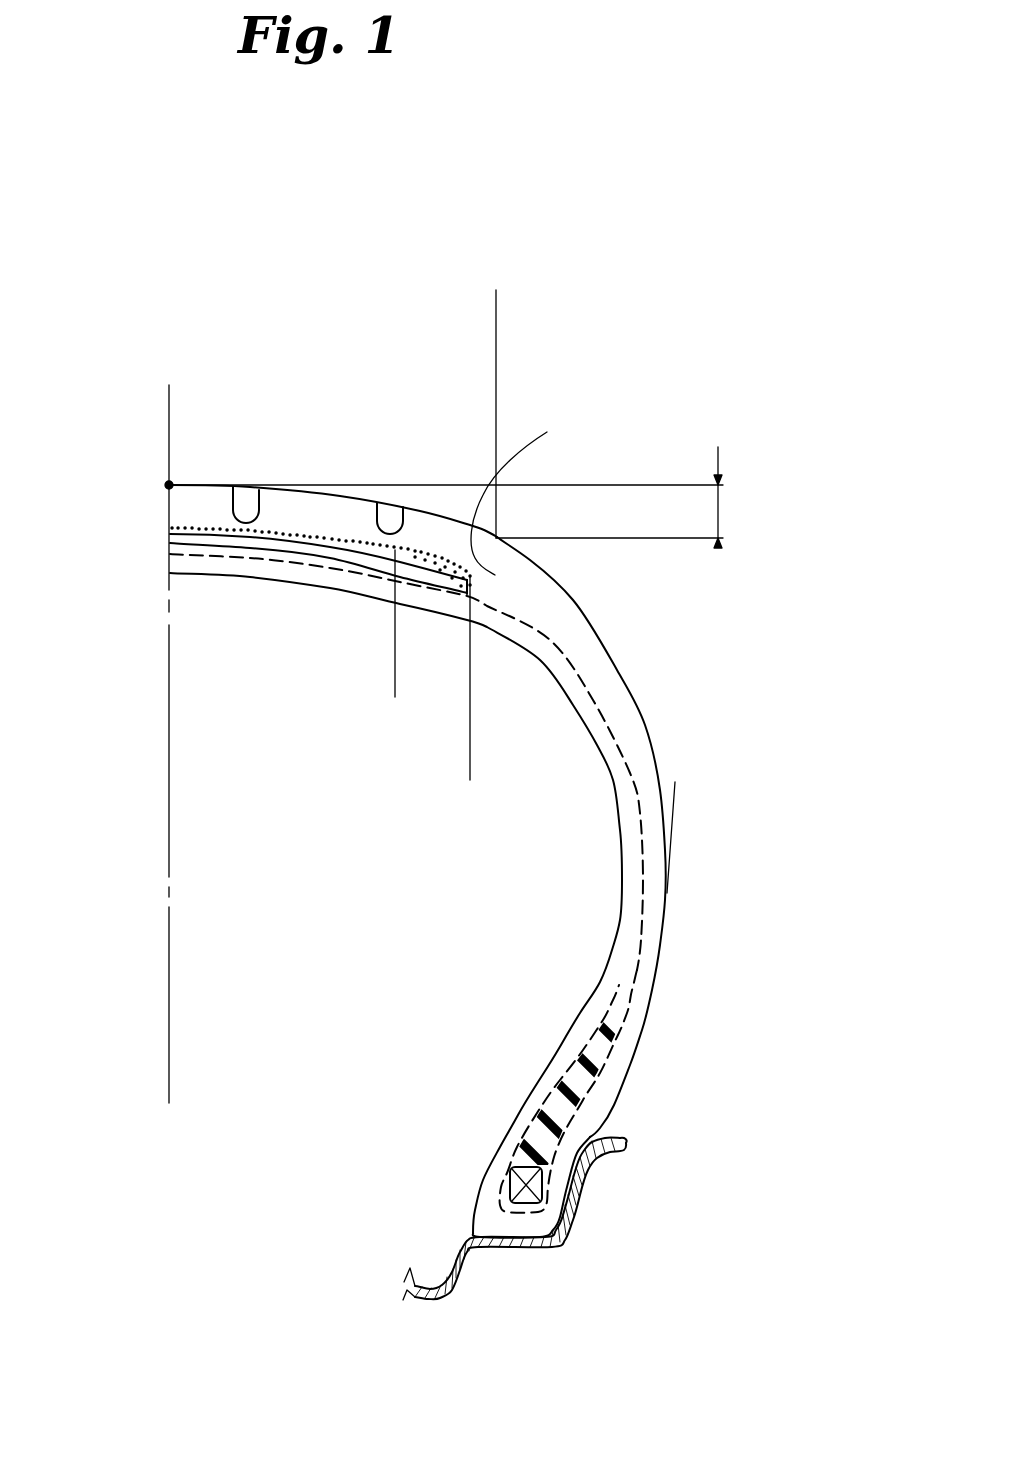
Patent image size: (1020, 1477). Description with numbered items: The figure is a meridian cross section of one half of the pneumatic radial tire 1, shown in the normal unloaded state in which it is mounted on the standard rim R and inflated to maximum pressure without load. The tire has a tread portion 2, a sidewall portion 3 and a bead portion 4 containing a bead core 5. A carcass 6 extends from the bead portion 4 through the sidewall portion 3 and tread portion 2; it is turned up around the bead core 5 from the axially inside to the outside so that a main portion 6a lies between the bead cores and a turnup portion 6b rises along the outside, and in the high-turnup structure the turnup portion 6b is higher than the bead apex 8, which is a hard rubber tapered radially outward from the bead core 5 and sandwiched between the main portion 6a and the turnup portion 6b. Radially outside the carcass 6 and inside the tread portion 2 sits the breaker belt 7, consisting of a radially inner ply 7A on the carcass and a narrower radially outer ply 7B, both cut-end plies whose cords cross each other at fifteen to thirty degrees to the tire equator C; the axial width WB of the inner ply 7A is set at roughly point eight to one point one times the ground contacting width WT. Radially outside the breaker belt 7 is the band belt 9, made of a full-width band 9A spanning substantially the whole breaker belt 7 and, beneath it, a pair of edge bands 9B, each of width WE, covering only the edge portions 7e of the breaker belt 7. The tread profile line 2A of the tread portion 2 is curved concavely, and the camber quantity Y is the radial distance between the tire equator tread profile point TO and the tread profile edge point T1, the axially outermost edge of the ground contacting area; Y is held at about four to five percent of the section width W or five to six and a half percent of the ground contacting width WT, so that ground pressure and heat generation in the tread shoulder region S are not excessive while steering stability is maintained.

The pneumatic radial tire 1 is at (449, 772).
The tread portion 2 is at (335, 487).
The tread surface 2A is at (293, 490).
The sidewall portion 3 is at (640, 673).
The bead portion 4 is at (577, 1180).
The bead core 5 is at (523, 1200).
The carcass 6 is at (406, 883).
The main portion 6a is at (640, 868).
The turnup portion 6b is at (635, 980).
The breaker belt 7 is at (369, 557).
The radially inner ply 7A is at (303, 557).
The radially outer ply 7B is at (247, 537).
The edge portion 7e is at (519, 483).
The bead apex 8 is at (593, 1060).
The band belt 9 is at (321, 490).
The full-width band 9A is at (343, 543).
The edge band 9B is at (470, 547).
The standard rim R is at (537, 1243).
The tire equator C is at (170, 1057).
The tire equator tread profile point TO is at (160, 484).
The tread profile edge point T1 is at (500, 537).
The camber quantity Y is at (720, 497).
The tread shoulder region S is at (482, 518).
The ground contacting width WT is at (496, 299).
The width of edge band WE is at (470, 675).
The axial width of inner breaker ply WB is at (470, 782).
The section width W is at (662, 816).